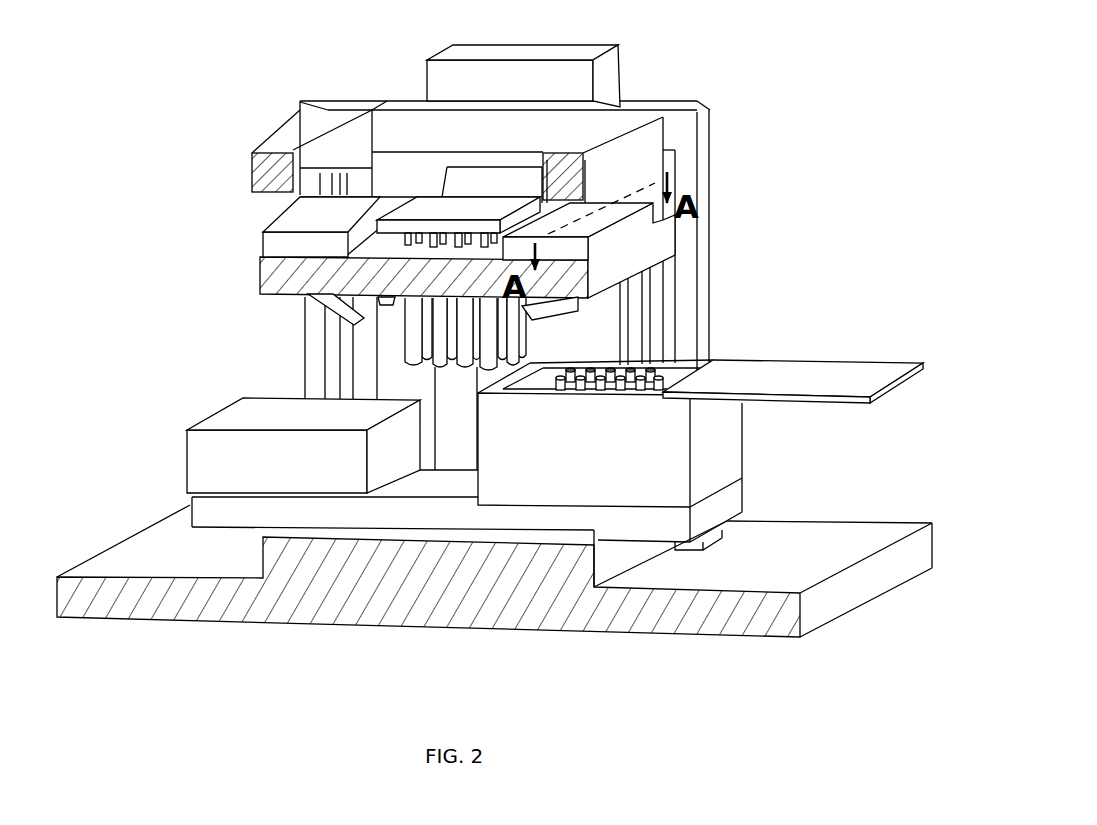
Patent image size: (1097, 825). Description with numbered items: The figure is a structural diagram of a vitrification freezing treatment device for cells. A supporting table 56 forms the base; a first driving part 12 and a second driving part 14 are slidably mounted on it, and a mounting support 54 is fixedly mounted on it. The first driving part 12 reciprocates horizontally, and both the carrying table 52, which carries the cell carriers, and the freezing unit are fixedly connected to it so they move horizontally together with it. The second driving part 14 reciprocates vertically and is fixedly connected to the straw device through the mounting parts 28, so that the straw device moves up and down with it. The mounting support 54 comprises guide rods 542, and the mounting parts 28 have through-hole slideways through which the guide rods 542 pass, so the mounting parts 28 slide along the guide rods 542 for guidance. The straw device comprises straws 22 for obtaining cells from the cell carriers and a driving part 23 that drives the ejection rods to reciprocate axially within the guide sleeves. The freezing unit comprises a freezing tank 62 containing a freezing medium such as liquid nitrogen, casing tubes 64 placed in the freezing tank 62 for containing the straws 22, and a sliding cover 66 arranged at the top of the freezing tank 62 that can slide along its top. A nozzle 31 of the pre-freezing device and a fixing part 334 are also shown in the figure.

The first driving part 12 is at (232, 512).
The second driving part 14 is at (533, 82).
The straw 22 is at (478, 338).
The driving part 23 is at (449, 217).
The mounting part 28 is at (432, 256).
The nozzle 31 is at (340, 303).
The carrying table 52 is at (238, 459).
The mounting support 54 is at (264, 162).
The supporting table 56 is at (157, 551).
The freezing tank 62 is at (603, 470).
The casing tube 64 is at (587, 382).
The sliding cover 66 is at (752, 376).
The fixing part 334 is at (621, 252).
The guide rod 542 is at (342, 174).